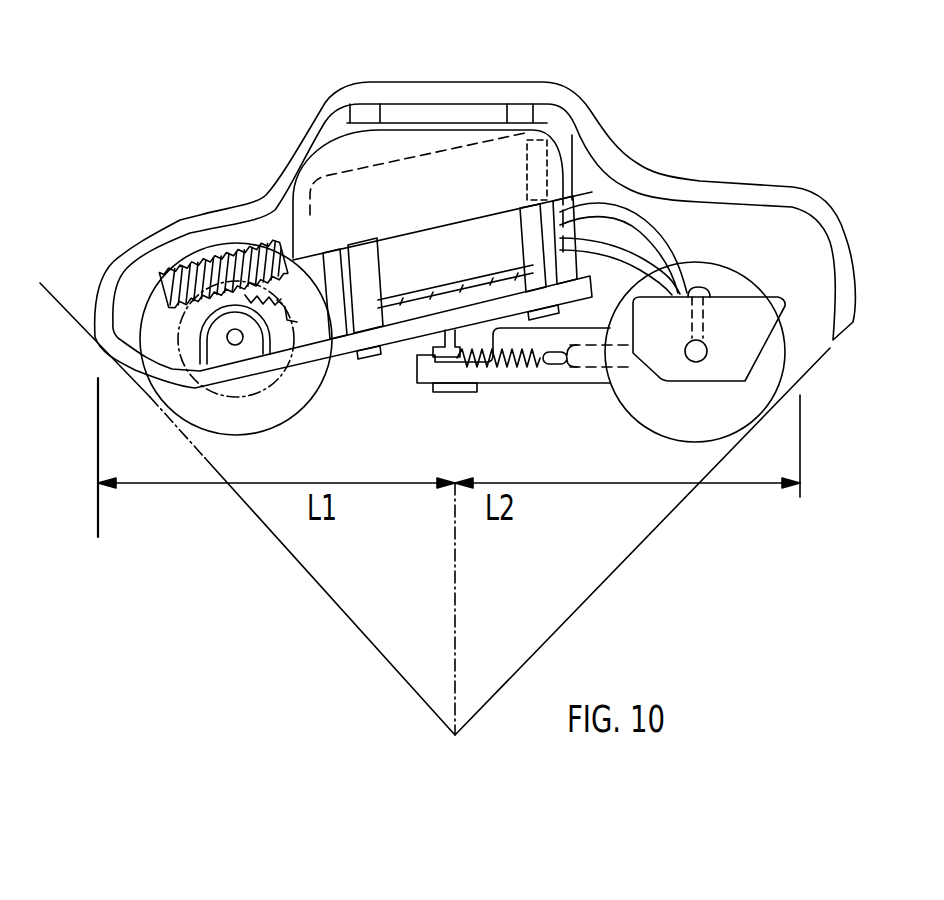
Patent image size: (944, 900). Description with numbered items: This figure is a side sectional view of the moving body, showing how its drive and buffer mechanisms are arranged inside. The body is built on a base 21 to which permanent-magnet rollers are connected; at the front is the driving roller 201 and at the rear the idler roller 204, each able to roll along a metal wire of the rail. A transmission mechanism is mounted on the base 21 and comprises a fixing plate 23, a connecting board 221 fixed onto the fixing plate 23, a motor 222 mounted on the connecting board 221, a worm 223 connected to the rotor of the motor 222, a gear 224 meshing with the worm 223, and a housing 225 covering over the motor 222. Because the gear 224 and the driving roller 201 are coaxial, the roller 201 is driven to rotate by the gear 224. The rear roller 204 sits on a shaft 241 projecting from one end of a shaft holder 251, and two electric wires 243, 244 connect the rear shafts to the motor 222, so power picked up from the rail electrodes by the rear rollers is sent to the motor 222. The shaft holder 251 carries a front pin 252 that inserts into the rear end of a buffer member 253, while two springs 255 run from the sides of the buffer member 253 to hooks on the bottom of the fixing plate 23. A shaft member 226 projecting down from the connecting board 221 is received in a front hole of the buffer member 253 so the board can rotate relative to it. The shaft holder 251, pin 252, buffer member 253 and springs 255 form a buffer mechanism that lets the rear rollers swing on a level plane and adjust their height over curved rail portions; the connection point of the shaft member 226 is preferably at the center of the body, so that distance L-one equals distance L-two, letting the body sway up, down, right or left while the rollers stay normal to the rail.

The base 21 is at (107, 353).
The fixing plate 23 is at (347, 358).
The roller 201 is at (205, 434).
The roller 204 is at (687, 442).
The connecting board 221 is at (390, 358).
The motor 222 is at (330, 268).
The worm 223 is at (195, 264).
The gear 224 is at (262, 250).
The housing 225 is at (432, 128).
The shaft member 226 is at (447, 392).
The shaft 241 is at (707, 360).
The electric wire 243 is at (633, 243).
The electric wire 244 is at (620, 207).
The shaft holder 251 is at (760, 357).
The front pin 252 is at (587, 387).
The buffer member 253 is at (527, 387).
The spring 255 is at (493, 387).